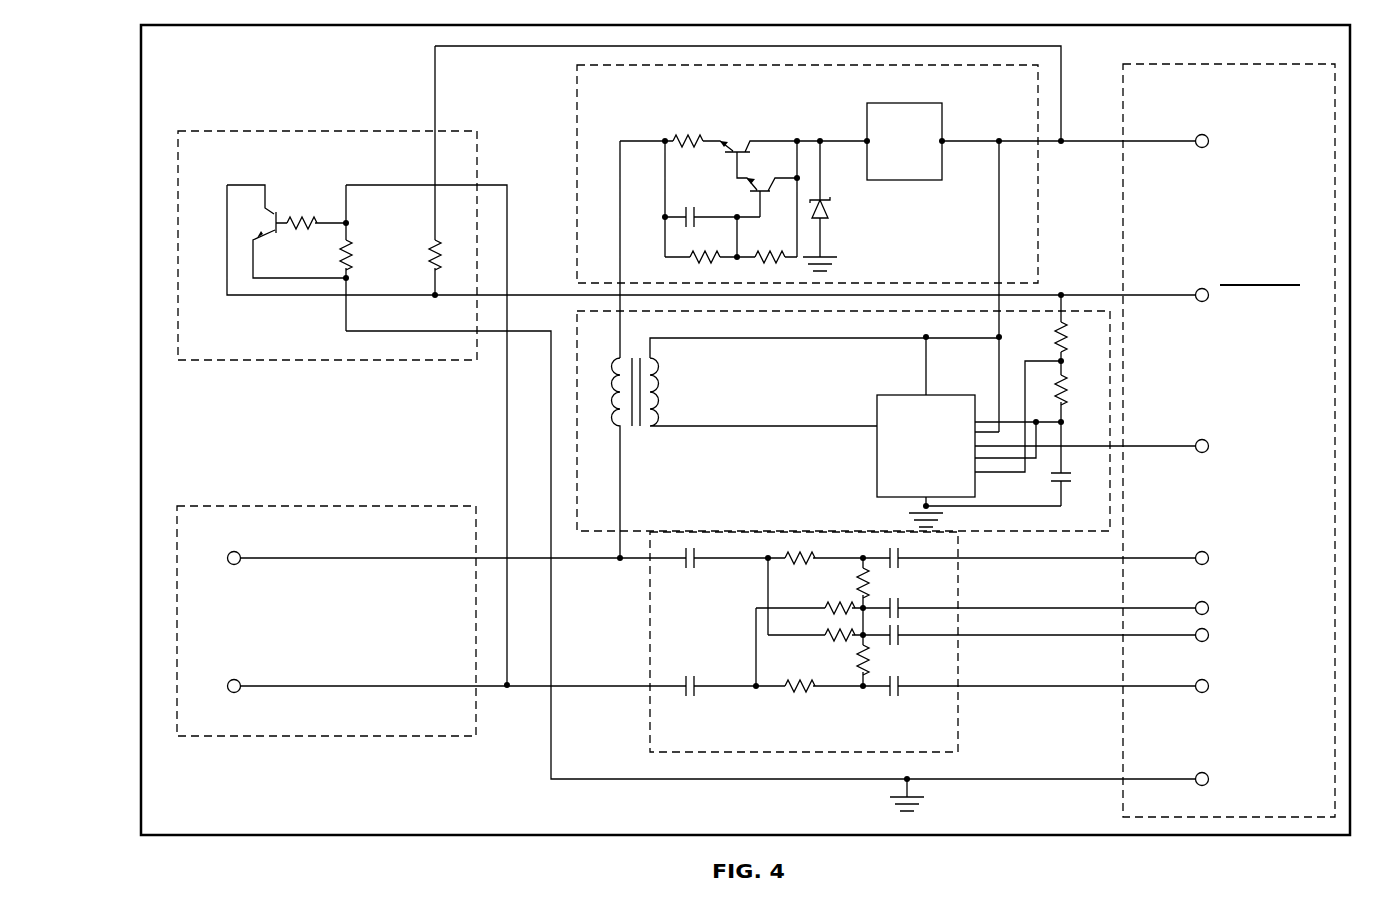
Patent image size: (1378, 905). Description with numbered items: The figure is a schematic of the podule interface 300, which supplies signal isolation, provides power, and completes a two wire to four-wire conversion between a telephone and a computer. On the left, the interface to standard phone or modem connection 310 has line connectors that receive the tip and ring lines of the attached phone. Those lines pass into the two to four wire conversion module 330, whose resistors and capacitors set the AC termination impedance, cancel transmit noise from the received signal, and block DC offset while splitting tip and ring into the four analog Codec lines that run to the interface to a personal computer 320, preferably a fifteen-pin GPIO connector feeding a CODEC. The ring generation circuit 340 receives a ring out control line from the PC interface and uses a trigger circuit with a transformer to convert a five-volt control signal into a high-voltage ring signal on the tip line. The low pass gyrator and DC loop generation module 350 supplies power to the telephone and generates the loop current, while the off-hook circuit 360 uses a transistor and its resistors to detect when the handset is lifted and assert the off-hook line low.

The podule interface 300 is at (368, 104).
The interface to standard phone or modem connection 310 is at (337, 547).
The interface to a personal computer 320 is at (1228, 256).
The two to four wire conversion module 330 is at (917, 742).
The ring generation circuit 340 is at (755, 521).
The low pass gyrator and DC loop generation module 350 is at (638, 121).
The off-hook circuit 360 is at (314, 341).